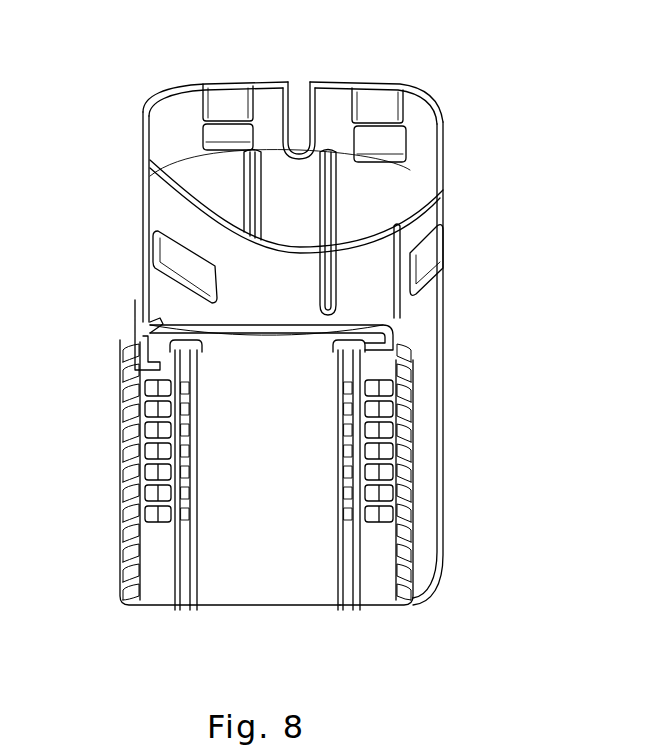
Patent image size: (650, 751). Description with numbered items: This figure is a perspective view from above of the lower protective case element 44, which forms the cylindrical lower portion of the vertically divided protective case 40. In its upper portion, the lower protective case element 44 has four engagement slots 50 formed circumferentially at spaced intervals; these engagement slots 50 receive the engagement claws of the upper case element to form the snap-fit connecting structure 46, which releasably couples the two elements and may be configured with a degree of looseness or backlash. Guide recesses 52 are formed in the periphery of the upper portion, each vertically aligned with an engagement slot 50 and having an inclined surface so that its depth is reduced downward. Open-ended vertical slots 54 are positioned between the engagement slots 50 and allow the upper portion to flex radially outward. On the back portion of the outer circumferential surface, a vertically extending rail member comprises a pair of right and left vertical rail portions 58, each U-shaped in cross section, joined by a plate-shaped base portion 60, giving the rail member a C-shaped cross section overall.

The protective case 40 is at (432, 345).
The lower protective case element 44 is at (478, 363).
The snap-fit connecting structure 46 is at (233, 130).
The engagement slots 50 is at (298, 155).
The guide recesses 52 is at (216, 100).
The vertical slots 54 is at (297, 128).
The rail portions 58 is at (183, 562).
The base portion 60 is at (268, 558).